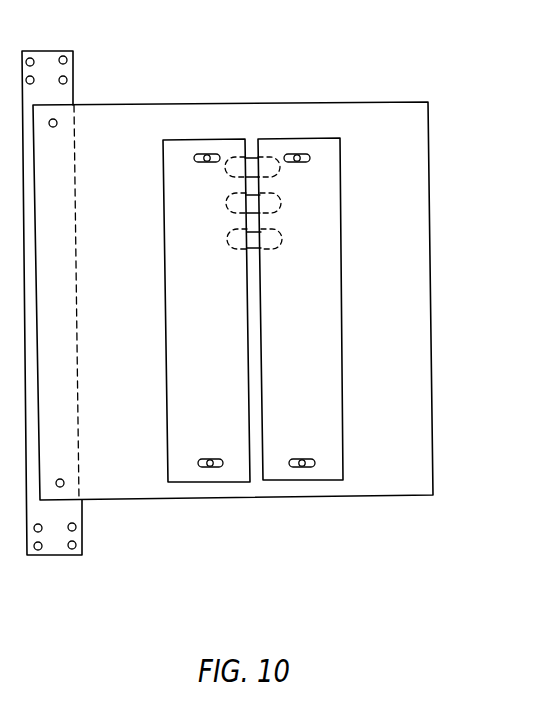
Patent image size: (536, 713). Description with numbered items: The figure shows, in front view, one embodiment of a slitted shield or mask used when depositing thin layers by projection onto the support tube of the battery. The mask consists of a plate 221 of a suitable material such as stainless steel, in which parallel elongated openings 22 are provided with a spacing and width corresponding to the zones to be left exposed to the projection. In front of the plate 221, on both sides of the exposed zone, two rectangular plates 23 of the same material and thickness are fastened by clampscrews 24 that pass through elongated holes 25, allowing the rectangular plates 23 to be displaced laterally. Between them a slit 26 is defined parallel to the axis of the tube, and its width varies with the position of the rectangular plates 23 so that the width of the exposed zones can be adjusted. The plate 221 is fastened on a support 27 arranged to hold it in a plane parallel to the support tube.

The plate 221 is at (440, 340).
The support 27 is at (55, 540).
The rectangular plates 23 is at (193, 440).
The slit 26 is at (253, 357).
The elongated openings 22 is at (263, 240).
The clampscrews 24 is at (208, 150).
The elongated holes 25 is at (204, 468).